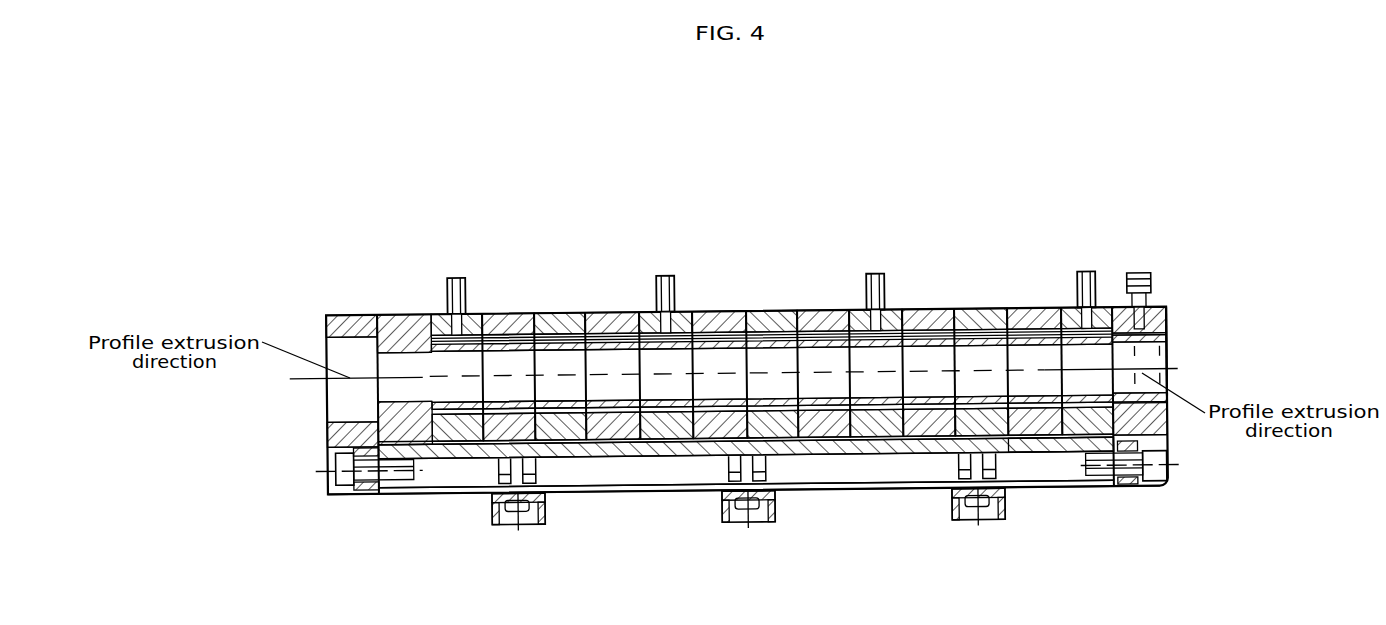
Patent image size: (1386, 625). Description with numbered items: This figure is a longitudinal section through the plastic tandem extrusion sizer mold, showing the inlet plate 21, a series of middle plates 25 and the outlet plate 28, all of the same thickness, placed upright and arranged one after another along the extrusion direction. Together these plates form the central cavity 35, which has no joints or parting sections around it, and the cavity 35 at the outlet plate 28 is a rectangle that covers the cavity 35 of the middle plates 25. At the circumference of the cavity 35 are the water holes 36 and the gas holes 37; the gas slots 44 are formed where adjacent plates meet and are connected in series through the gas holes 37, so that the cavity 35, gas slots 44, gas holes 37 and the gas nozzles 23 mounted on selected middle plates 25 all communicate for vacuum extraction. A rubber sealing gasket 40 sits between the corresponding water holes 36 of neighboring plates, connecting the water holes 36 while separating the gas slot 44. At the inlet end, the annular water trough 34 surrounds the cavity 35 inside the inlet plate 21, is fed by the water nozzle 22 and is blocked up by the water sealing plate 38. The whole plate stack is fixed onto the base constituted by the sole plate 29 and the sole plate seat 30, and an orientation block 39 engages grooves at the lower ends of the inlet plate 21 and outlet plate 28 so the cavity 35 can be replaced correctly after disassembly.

The inlet plate 21 is at (1163, 337).
The water nozzle 22 is at (1137, 276).
The gas nozzle 23 is at (452, 276).
The middle plate 25 is at (960, 309).
The outlet plate 28 is at (365, 323).
The base 29 is at (1017, 463).
The sole plate seat 30 is at (980, 521).
The annular water trough 34 is at (1144, 309).
The cavity 35 is at (822, 364).
The water hole 36 is at (1059, 446).
The gas hole 37 is at (1055, 310).
The water sealing plate 38 is at (1168, 337).
The orientation block 39 is at (1119, 487).
The sealing gasket 40 is at (861, 441).
The gas slot 44 is at (577, 323).